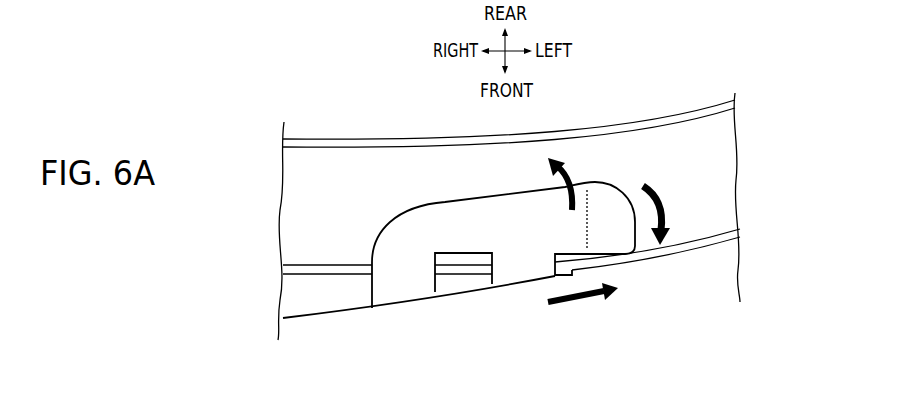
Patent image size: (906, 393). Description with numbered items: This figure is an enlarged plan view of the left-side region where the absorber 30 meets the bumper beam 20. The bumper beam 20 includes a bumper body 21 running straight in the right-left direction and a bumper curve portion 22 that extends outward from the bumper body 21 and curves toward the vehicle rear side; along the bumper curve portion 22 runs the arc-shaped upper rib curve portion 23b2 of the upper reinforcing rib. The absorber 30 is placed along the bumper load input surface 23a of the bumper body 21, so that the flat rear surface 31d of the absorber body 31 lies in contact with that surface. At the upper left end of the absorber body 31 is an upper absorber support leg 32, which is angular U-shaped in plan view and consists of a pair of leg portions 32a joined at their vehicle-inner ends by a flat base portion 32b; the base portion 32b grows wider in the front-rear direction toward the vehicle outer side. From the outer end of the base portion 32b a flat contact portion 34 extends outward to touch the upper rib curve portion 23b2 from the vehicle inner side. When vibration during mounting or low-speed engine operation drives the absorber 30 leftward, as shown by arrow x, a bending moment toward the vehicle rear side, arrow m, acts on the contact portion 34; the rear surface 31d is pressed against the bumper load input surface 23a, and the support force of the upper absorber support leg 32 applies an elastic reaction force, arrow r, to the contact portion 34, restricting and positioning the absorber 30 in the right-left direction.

The bumper beam 20 is at (382, 136).
The bumper body 21 is at (323, 175).
The bumper curve portion 22 is at (700, 162).
The bumper load input surface 23a is at (303, 272).
The upper rib curve portion 23b2 is at (667, 253).
The absorber 30 is at (381, 312).
The absorber body 31 is at (302, 302).
The rear surface 31d is at (346, 268).
The upper absorber support leg 32 is at (442, 208).
The leg portion 32a is at (409, 280).
The base portion 32b is at (462, 238).
The contact portion 34 is at (610, 203).
The bending moment arrow m is at (567, 180).
The elastic reaction force arrow r is at (664, 200).
The absorber movement arrow x is at (581, 303).